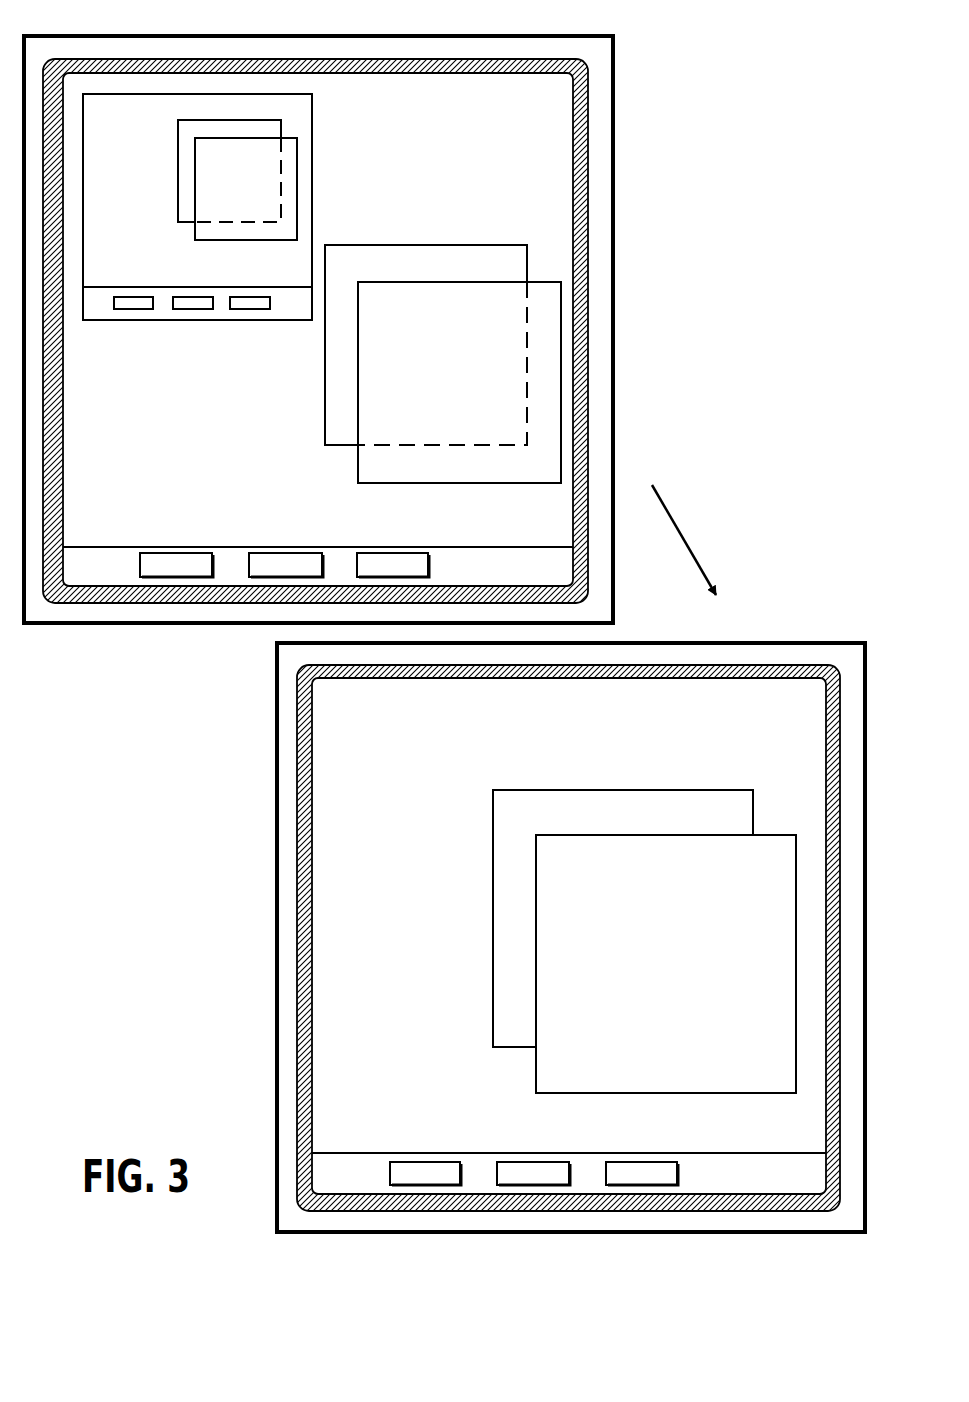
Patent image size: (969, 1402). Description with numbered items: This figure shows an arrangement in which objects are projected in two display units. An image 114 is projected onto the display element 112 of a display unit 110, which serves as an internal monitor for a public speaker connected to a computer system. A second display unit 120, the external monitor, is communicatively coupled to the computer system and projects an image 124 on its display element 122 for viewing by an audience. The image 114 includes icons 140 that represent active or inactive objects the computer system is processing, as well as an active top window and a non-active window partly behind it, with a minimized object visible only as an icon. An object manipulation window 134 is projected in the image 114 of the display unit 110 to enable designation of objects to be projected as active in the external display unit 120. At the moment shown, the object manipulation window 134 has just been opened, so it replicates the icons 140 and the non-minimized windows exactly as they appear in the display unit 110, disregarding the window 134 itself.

The display unit 110 is at (598, 75).
The display element 112 is at (587, 210).
The image 114 is at (555, 137).
The second display unit 120 is at (288, 1090).
The display element 122 is at (297, 910).
The image 124 is at (330, 967).
The object manipulation window 134 is at (313, 137).
The icons 140 is at (272, 516).